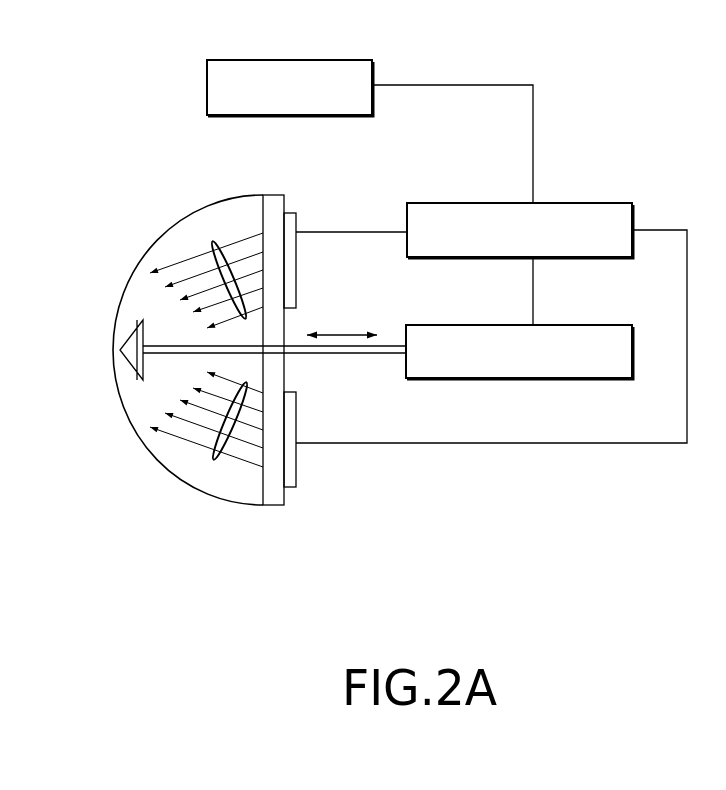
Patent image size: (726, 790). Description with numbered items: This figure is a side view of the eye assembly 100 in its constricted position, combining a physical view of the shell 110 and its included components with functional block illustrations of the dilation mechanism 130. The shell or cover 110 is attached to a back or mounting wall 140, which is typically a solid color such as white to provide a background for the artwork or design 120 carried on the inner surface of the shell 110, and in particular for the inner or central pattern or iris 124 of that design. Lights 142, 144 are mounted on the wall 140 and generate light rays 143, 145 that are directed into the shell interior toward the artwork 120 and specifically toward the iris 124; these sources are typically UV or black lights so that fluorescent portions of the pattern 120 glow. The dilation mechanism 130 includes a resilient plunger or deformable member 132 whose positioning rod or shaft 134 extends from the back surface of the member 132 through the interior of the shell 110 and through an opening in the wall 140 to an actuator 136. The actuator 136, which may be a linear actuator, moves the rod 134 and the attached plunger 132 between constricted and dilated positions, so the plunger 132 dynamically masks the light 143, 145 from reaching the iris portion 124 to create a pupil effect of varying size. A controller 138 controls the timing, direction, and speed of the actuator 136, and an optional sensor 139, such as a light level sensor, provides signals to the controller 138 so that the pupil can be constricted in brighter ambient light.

The eye assembly 100 is at (130, 172).
The shell 110 is at (202, 490).
The artwork or design 120 is at (156, 446).
The iris 124 is at (130, 294).
The dilation mechanism 130 is at (394, 379).
The resilient plunger 132 is at (122, 377).
The positioning rod 134 is at (315, 355).
The actuator 136 is at (605, 364).
The controller 138 is at (622, 244).
The sensor 139 is at (363, 102).
The mounting wall 140 is at (287, 505).
The light source 142 is at (296, 465).
The light rays 143 is at (223, 450).
The light source 144 is at (296, 222).
The light rays 145 is at (228, 243).